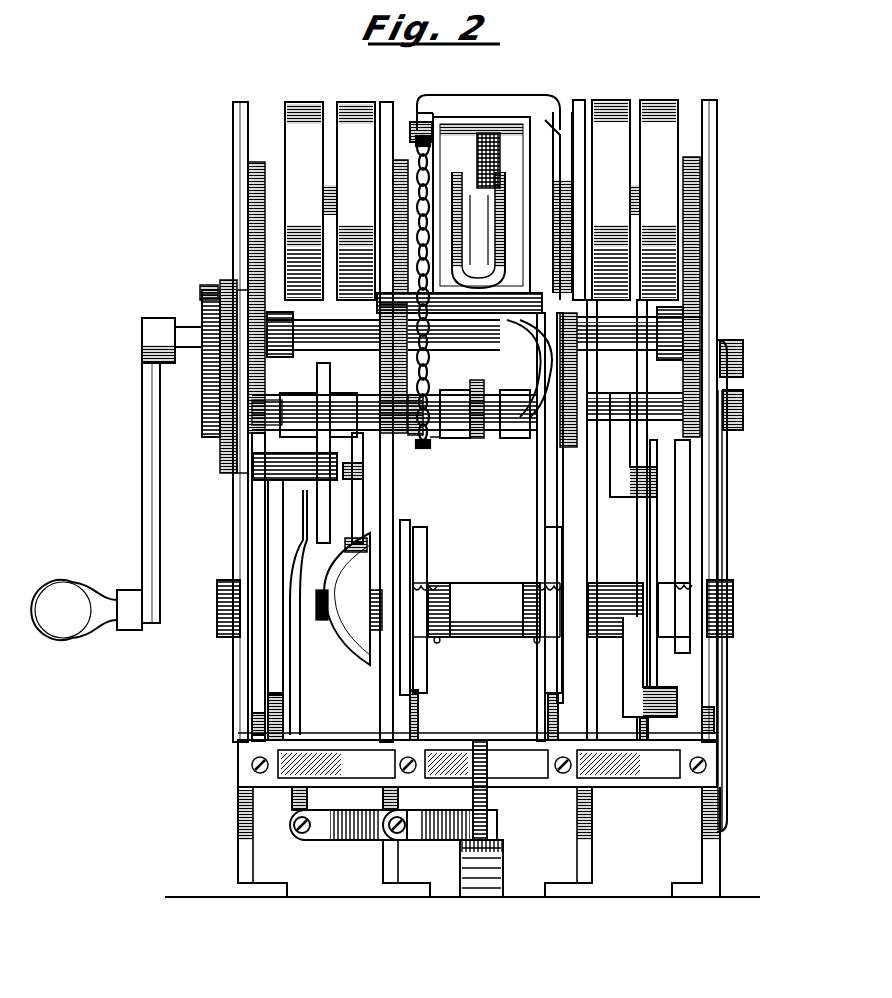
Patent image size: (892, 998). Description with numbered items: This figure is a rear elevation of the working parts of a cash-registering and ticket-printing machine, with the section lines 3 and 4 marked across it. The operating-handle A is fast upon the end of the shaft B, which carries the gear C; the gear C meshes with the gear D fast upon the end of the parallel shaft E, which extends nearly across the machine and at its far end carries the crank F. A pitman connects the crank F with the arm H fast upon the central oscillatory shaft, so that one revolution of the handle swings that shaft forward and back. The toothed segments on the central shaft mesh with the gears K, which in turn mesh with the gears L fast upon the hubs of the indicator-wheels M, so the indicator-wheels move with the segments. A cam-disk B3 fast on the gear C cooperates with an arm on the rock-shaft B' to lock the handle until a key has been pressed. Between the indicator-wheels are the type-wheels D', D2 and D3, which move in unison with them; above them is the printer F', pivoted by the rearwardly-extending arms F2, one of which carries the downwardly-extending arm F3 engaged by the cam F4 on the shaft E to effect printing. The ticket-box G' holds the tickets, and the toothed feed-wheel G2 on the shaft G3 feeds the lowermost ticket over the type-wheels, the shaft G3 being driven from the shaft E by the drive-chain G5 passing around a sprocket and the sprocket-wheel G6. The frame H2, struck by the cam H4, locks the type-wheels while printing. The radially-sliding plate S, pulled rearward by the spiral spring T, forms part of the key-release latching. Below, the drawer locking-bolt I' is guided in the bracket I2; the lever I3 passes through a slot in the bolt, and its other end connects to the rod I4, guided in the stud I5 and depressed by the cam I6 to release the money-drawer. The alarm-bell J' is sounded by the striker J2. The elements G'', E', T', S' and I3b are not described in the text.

The operating-handle A is at (150, 418).
The indicator-wheels M is at (340, 102).
The gears L is at (254, 166).
The gears K is at (250, 248).
The chain G'' is at (398, 258).
The impression-plate or printer F' is at (488, 177).
The rearwardly-extending arms F2 is at (430, 104).
The downwardly-extending arm F3 is at (575, 120).
The toothed feed-wheel G2 is at (490, 142).
The shaft G3 is at (458, 170).
The type-wheel D2 is at (462, 244).
The type-wheel D3 is at (498, 244).
The type-wheel D' is at (520, 269).
The frame H2 is at (459, 305).
The section line 3 3 is at (480, 933).
The section line 4 4 is at (630, 917).
The shaft B is at (196, 361).
The cam-disk B3 is at (205, 288).
The gear C is at (225, 282).
The gear D is at (216, 381).
The shaft E is at (394, 434).
The shaft collar E' is at (269, 402).
The cam I6 is at (330, 400).
The lever I3 is at (356, 445).
The stud I5 is at (320, 478).
The striker J2 is at (355, 548).
The alarm-bell J' is at (349, 599).
The rod I4 is at (308, 710).
The drive-chain G5 is at (428, 440).
The sprocket-wheel G6 is at (465, 440).
The cam H4 is at (476, 440).
The cam F4 is at (530, 370).
The rock-shaft B' is at (635, 398).
The crank F is at (633, 445).
The box G' is at (637, 575).
The spiral spring T is at (487, 595).
The drum sleeve T' is at (534, 594).
The radially-sliding plate S is at (446, 651).
The spring S' is at (524, 651).
The arm H is at (630, 670).
The locking-bolt I' is at (501, 790).
The bracket I2 is at (505, 848).
The lever I3b is at (362, 838).